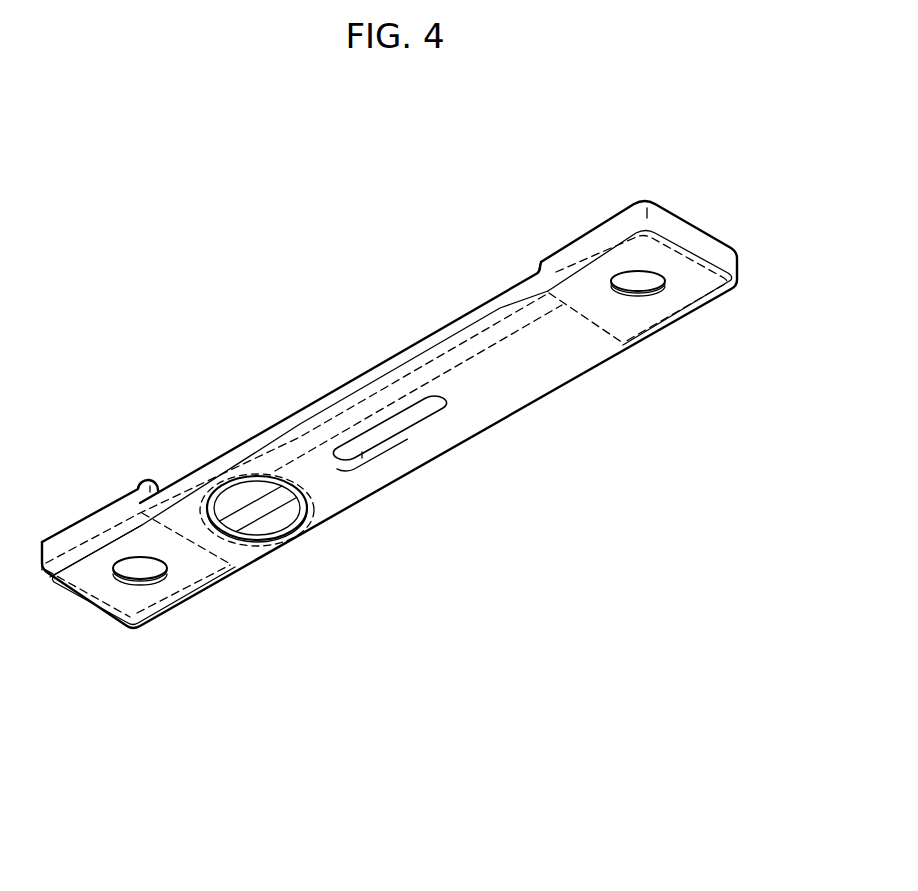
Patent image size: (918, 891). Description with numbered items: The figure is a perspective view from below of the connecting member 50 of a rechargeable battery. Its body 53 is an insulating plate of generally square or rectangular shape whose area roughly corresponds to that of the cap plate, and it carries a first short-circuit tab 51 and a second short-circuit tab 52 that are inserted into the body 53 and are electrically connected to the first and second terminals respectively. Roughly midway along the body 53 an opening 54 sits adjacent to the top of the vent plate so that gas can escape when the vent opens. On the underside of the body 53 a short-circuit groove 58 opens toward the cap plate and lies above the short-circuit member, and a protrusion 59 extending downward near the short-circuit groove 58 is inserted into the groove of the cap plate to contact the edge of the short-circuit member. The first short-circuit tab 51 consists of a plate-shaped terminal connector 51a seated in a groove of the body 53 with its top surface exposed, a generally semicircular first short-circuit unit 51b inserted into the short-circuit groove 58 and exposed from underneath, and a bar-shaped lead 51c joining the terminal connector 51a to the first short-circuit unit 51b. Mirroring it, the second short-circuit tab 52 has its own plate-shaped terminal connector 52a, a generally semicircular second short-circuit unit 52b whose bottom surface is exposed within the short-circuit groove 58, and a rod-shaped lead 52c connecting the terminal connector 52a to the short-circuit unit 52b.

The connecting member 50 is at (389, 414).
The first short-circuit tab 51 is at (602, 331).
The terminal connector 51a is at (693, 293).
The first short-circuit unit 51b is at (240, 500).
The lead 51c is at (488, 328).
The second short-circuit tab 52 is at (182, 600).
The terminal connector 52a is at (122, 597).
The second short-circuit unit 52b is at (288, 515).
The lead 52c is at (230, 550).
The body 53 is at (343, 493).
The opening 54 is at (400, 438).
The short-circuit groove 58 is at (277, 530).
The protrusion 59 is at (260, 537).